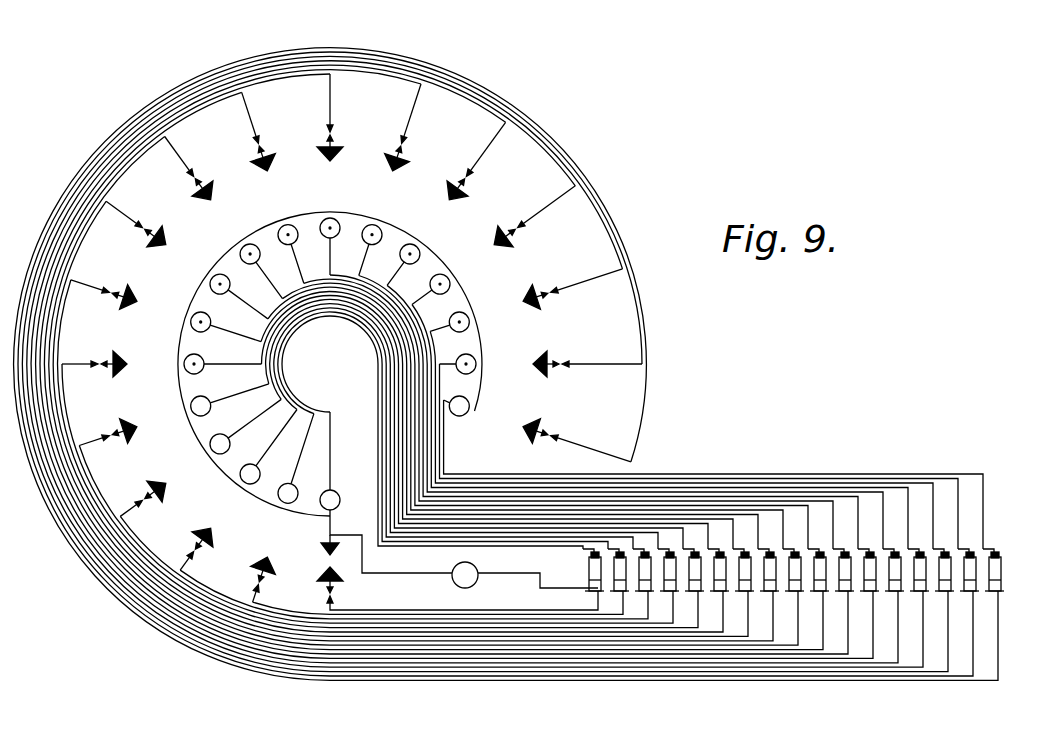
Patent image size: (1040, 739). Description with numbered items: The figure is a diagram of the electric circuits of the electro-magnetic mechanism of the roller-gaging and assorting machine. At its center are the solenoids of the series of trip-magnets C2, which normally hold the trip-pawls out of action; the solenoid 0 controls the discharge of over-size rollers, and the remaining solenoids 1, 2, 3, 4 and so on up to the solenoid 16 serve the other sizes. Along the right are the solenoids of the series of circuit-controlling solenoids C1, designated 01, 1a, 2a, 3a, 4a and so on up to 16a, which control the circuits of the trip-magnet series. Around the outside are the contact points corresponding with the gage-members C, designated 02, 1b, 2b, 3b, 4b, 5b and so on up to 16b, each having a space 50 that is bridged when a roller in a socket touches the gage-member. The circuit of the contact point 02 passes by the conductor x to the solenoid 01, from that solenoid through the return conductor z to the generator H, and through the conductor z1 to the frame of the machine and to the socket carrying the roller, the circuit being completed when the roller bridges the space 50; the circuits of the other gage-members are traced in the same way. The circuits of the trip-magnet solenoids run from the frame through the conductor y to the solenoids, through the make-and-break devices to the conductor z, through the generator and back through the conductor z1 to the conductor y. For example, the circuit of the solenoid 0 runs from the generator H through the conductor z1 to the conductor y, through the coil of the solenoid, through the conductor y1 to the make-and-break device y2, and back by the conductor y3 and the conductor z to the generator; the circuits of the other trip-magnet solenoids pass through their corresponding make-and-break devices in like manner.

The contact point 5b is at (101, 367).
The contact point 4b is at (118, 440).
The contact point 3b is at (144, 491).
The contact point 2b is at (197, 553).
The contact point 1b is at (259, 594).
The contact point 16b is at (598, 449).
The contact point 02 is at (333, 604).
The conductor x is at (388, 609).
The space 50 is at (256, 565).
The conductor y is at (327, 531).
The generator H is at (465, 575).
The conductor z1 is at (403, 563).
The return conductor z is at (537, 587).
The conductor y1 is at (374, 462).
The make-and-break device y2 is at (432, 438).
The solenoid 0 is at (330, 461).
The solenoid 1 is at (288, 493).
The solenoid 2 is at (250, 474).
The solenoid 3 is at (220, 444).
The solenoid 4 is at (201, 406).
The solenoid 16 is at (459, 406).
The series of trip-magnets C2 is at (381, 229).
The solenoid 01 is at (590, 581).
The conductor y3 is at (607, 607).
The solenoid 1a is at (624, 583).
The solenoid 2a is at (650, 583).
The solenoid 3a is at (676, 585).
The solenoid 4a is at (700, 587).
The solenoid 16a is at (997, 580).
The series of circuit-controlling solenoids C1 is at (651, 588).
The gage-members C is at (135, 542).